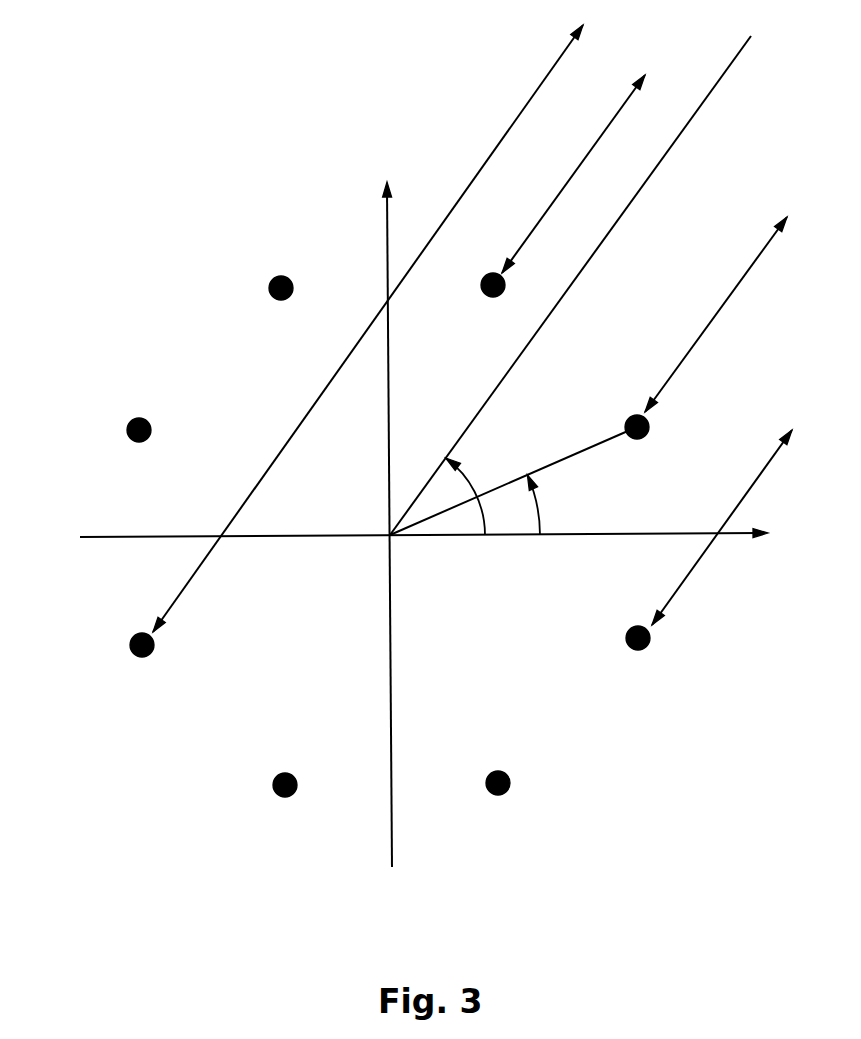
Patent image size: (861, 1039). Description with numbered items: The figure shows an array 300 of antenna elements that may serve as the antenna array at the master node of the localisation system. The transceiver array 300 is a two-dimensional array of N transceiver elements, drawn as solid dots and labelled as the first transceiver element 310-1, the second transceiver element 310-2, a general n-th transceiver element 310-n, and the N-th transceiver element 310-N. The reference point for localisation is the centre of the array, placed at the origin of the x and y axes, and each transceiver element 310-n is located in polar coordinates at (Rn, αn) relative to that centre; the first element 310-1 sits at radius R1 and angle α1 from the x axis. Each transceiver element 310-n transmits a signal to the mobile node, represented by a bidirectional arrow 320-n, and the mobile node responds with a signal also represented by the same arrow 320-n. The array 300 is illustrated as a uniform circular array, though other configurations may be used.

The array 300 is at (197, 128).
The bidirectional arrow 320-n is at (523, 107).
The transceiver element 310-1 is at (627, 417).
The transceiver element 310-2 is at (493, 297).
The transceiver element 310-n is at (133, 633).
The transceiver element 310-N is at (633, 652).